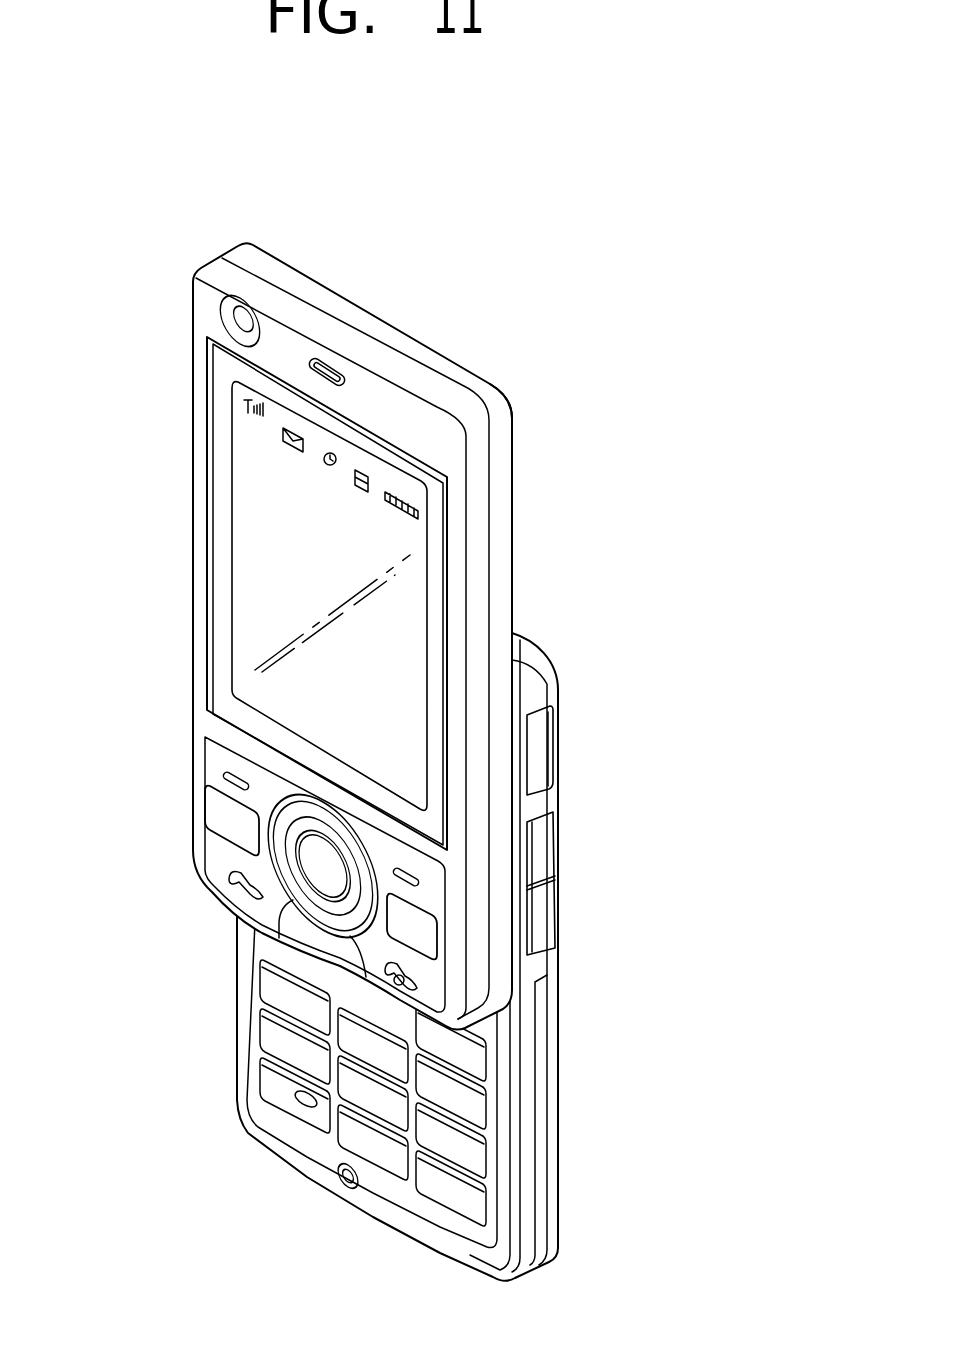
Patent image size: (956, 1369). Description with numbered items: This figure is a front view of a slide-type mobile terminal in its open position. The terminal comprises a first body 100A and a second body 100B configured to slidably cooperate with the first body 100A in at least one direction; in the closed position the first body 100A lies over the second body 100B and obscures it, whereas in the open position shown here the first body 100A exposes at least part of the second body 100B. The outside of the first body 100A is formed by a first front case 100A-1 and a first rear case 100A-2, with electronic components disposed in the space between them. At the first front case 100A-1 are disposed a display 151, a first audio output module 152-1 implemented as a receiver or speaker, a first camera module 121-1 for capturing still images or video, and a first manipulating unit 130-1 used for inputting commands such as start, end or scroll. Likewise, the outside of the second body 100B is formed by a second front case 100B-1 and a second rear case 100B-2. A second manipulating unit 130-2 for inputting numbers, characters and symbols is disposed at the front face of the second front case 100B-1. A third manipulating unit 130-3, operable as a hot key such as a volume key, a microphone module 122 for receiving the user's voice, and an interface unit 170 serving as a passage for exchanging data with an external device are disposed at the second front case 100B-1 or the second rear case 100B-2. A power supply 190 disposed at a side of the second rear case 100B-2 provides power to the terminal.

The first body 100A is at (150, 411).
The first front case 100A-1 is at (485, 520).
The first rear case 100A-2 is at (505, 470).
The second body 100B is at (226, 1003).
The second front case 100B-1 is at (523, 677).
The second rear case 100B-2 is at (555, 704).
The first camera module 121-1 is at (243, 320).
The microphone module 122 is at (347, 1186).
The first manipulating unit 130-1 is at (223, 811).
The second manipulating unit 130-2 is at (270, 1070).
The third manipulating unit 130-3 is at (546, 915).
The display 151 is at (246, 529).
The first audio output module 152-1 is at (329, 366).
The interface unit 170 is at (543, 745).
The power supply 190 is at (552, 1088).